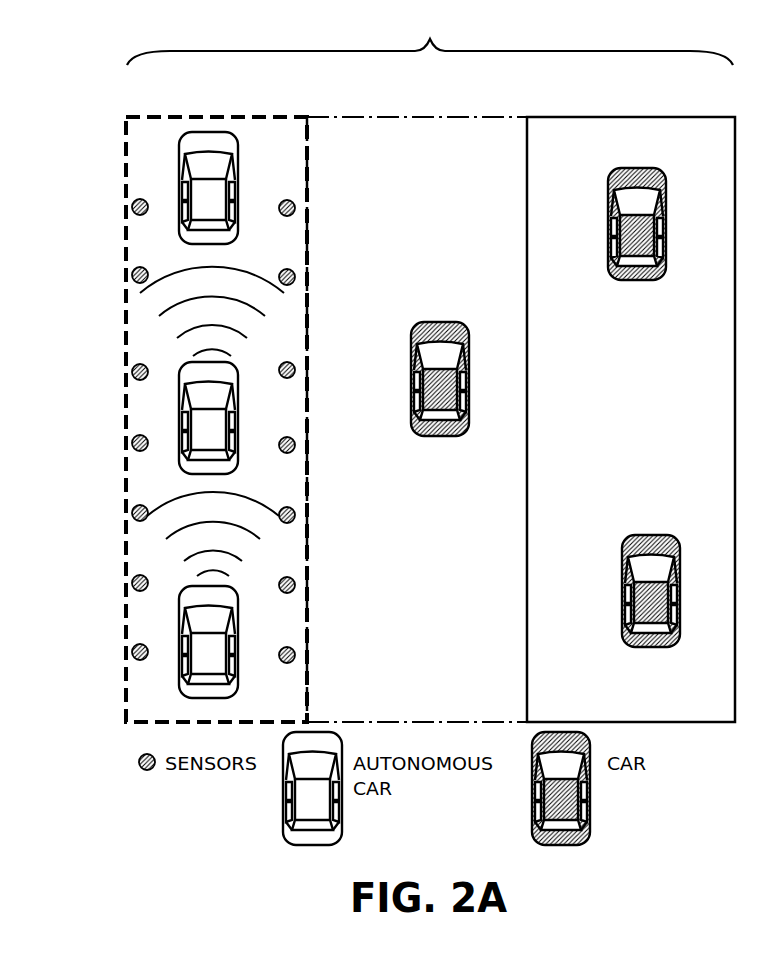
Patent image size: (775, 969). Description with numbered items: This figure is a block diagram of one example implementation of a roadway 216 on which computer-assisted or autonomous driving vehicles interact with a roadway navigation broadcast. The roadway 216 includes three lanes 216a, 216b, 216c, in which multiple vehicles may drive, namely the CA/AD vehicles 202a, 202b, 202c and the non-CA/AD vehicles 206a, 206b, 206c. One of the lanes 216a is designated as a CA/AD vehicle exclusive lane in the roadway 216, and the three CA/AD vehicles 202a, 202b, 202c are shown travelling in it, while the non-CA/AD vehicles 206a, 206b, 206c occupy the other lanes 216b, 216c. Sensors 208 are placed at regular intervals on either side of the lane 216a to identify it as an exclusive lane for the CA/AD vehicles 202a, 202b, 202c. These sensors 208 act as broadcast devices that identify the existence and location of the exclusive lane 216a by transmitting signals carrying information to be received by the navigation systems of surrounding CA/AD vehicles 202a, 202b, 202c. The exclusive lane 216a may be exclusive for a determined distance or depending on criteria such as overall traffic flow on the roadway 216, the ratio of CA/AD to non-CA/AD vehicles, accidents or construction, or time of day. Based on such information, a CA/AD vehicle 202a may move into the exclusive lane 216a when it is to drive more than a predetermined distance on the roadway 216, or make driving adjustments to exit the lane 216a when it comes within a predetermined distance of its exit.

The roadway 216 is at (430, 37).
The lane 216a is at (226, 101).
The lane 216b is at (416, 101).
The lane 216c is at (612, 101).
The CA/AD vehicle 202a is at (178, 621).
The CA/AD vehicle 202b is at (178, 427).
The CA/AD vehicle 202c is at (178, 165).
The non-CA/AD vehicle 206a is at (442, 321).
The non-CA/AD vehicle 206b is at (628, 281).
The non-CA/AD vehicle 206c is at (648, 534).
The sensors 208 is at (136, 212).